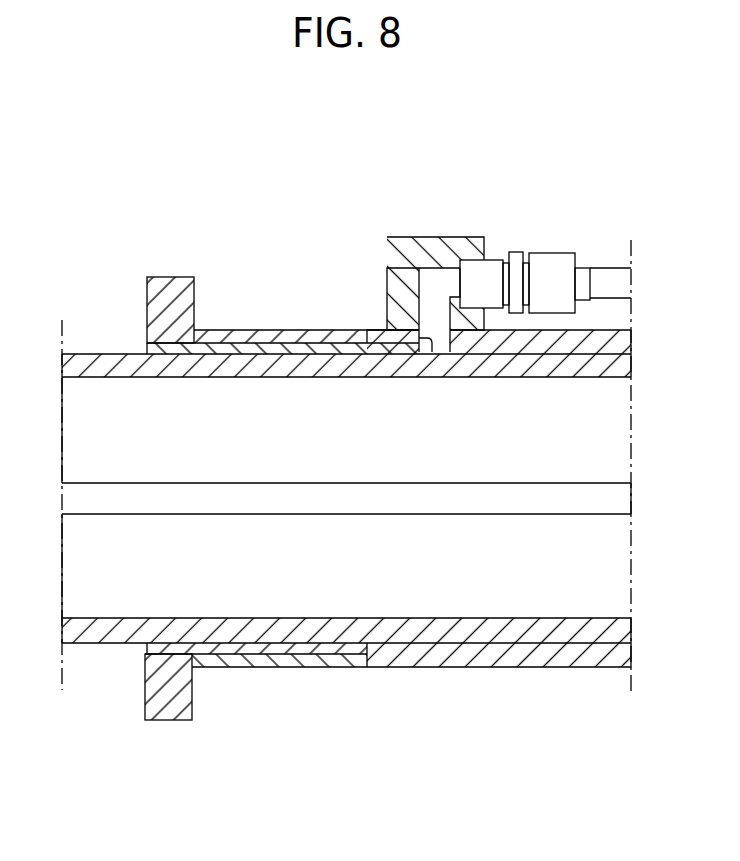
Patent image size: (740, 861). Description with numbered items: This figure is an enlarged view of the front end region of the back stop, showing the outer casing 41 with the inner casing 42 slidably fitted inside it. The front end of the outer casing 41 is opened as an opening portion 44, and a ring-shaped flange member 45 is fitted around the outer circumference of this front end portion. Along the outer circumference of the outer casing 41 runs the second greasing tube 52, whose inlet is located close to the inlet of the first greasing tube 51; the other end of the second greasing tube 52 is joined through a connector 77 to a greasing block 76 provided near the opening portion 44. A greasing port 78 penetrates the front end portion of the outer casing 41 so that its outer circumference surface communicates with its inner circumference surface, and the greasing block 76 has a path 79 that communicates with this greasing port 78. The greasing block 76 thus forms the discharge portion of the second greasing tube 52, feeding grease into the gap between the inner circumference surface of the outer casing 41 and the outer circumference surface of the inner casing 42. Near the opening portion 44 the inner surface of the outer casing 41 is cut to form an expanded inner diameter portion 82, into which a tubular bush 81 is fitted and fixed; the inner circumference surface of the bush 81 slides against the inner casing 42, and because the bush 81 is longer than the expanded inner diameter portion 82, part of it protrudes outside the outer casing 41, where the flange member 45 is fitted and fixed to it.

The outer casing 41 is at (459, 658).
The inner casing 42 is at (418, 633).
The opening portion 44 is at (165, 650).
The flange member 45 is at (172, 712).
The first greasing tube 51 is at (238, 495).
The second greasing tube 52 is at (613, 276).
The greasing block 76 is at (438, 240).
The connector 77 is at (553, 263).
The greasing port 78 is at (430, 340).
The path 79 is at (426, 291).
The bush 81 is at (262, 648).
The expanded inner diameter portion 82 is at (290, 652).